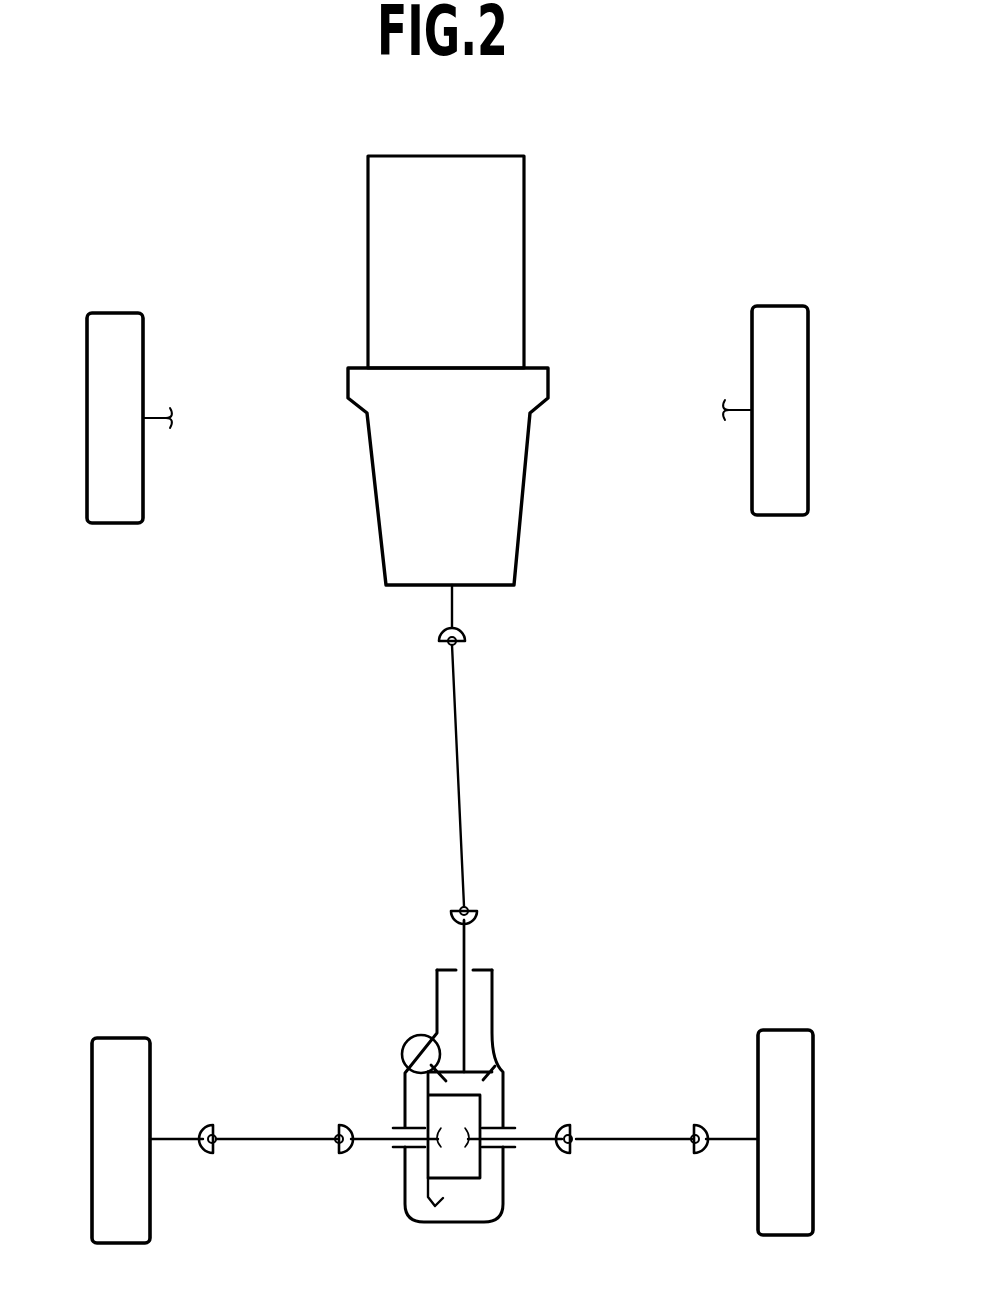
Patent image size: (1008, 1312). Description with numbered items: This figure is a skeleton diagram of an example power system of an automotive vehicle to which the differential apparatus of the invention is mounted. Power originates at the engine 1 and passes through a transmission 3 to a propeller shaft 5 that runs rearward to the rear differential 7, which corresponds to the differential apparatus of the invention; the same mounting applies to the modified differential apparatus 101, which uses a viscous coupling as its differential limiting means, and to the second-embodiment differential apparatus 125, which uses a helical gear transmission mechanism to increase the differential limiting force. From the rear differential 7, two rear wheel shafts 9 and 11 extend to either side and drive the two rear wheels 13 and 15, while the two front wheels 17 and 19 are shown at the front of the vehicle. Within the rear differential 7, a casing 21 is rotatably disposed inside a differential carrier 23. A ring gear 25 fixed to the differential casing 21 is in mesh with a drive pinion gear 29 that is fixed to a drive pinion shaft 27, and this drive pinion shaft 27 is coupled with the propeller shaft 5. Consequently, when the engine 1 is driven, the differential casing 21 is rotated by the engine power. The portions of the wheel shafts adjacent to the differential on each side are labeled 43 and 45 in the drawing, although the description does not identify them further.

The engine 1 is at (512, 229).
The transmission 3 is at (514, 477).
The propeller shaft 5 is at (457, 744).
The rear differential 7 is at (516, 1094).
The differential apparatus 101 is at (449, 1094).
The differential apparatus 125 is at (449, 1094).
The rear wheel shaft 9 is at (265, 1150).
The rear wheel shaft 11 is at (635, 1147).
The rear wheel 13 is at (130, 1040).
The rear wheel 15 is at (795, 1032).
The front wheel 17 is at (127, 315).
The front wheel 19 is at (788, 310).
The casing 21 is at (458, 1180).
The differential carrier 23 is at (490, 992).
The ring gear 25 is at (430, 1072).
The drive pinion shaft 27 is at (455, 991).
The drive pinion gear 29 is at (433, 1040).
The left output shaft 43 is at (367, 1142).
The right output shaft 45 is at (530, 1140).